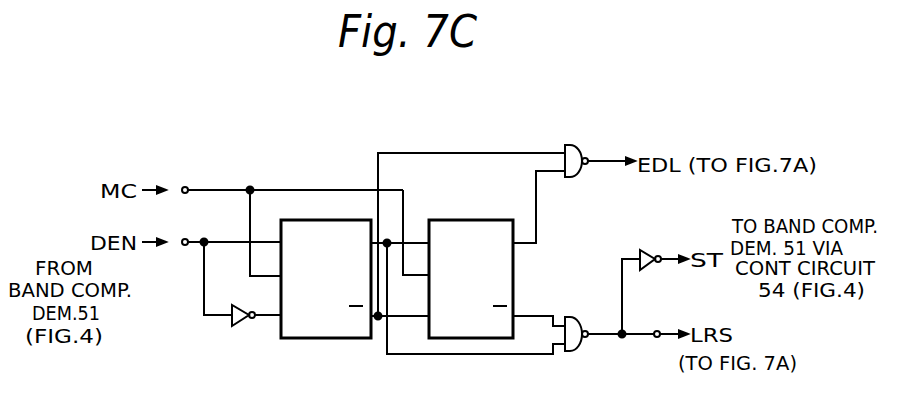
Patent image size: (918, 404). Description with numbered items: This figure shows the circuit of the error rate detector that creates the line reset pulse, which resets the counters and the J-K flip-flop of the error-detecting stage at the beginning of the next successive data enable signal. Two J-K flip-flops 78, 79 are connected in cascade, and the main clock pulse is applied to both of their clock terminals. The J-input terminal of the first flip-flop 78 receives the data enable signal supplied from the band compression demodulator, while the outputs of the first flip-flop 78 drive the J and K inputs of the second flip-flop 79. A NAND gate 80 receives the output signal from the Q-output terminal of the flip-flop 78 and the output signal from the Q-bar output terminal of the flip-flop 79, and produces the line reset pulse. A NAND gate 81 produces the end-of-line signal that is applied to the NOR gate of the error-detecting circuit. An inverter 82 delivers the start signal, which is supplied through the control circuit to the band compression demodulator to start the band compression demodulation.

The J-K flip-flop 78 is at (317, 204).
The J-K flip-flop 79 is at (454, 215).
The NAND gate 80 is at (575, 351).
The NAND gate 81 is at (575, 145).
The inverter 82 is at (644, 251).